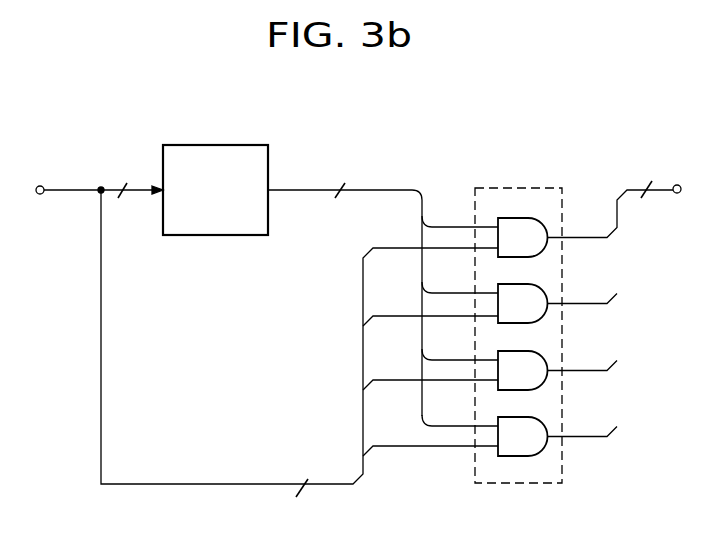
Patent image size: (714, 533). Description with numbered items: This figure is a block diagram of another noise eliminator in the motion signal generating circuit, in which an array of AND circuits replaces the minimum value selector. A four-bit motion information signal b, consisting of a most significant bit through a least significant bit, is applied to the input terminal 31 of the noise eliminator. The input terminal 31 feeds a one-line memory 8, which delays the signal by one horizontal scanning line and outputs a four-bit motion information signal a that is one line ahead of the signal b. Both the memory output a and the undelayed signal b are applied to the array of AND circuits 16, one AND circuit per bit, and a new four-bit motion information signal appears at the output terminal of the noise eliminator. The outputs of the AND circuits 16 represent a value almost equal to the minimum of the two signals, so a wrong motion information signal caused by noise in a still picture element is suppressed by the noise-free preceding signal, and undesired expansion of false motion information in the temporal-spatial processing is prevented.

The input terminal 31 is at (41, 186).
The 1H memory 8 is at (243, 145).
The array of AND circuits 16 is at (540, 188).
The motion information signal a is at (287, 191).
The motion information signal b is at (173, 484).